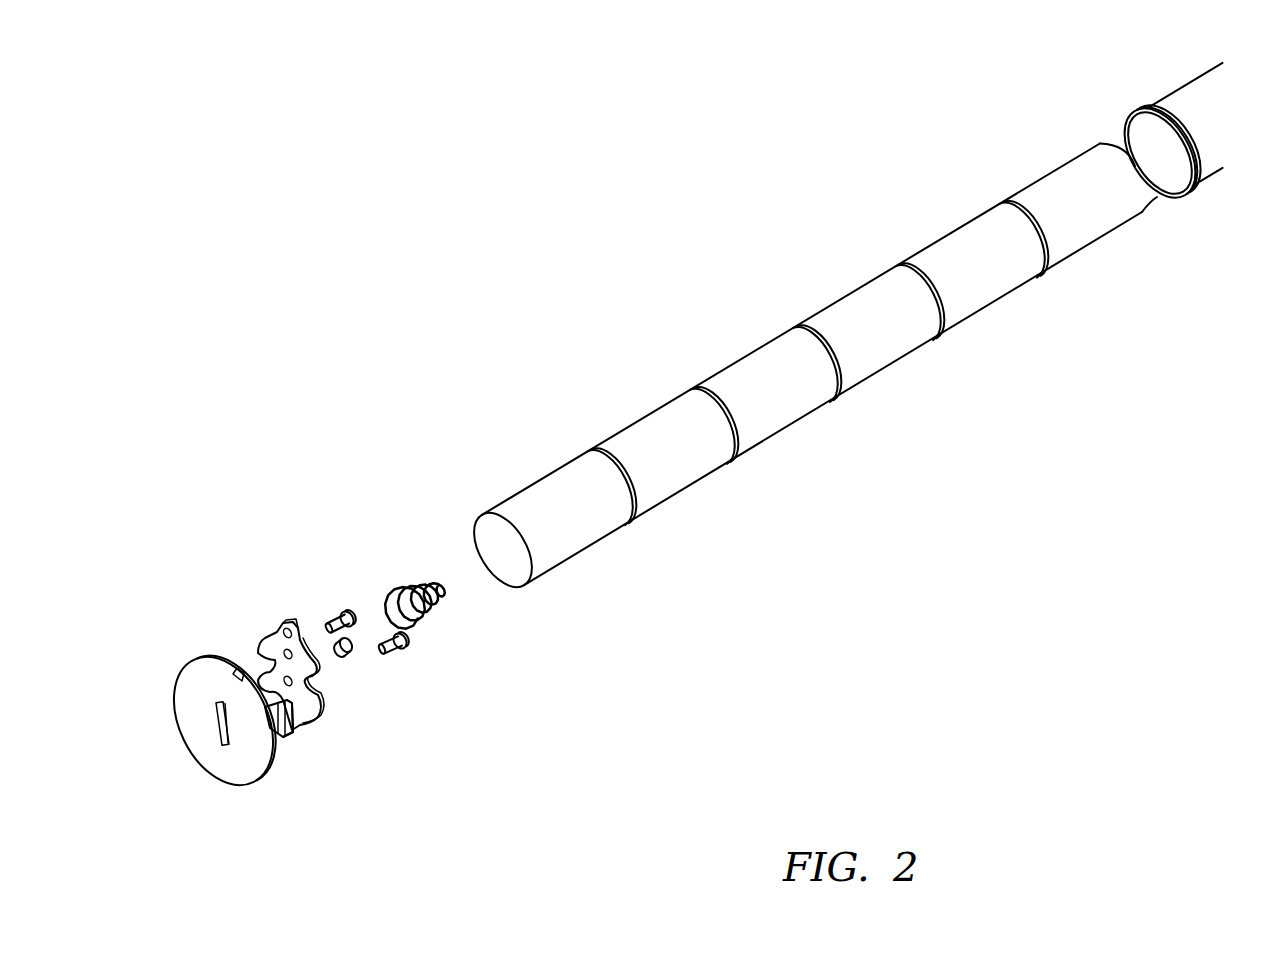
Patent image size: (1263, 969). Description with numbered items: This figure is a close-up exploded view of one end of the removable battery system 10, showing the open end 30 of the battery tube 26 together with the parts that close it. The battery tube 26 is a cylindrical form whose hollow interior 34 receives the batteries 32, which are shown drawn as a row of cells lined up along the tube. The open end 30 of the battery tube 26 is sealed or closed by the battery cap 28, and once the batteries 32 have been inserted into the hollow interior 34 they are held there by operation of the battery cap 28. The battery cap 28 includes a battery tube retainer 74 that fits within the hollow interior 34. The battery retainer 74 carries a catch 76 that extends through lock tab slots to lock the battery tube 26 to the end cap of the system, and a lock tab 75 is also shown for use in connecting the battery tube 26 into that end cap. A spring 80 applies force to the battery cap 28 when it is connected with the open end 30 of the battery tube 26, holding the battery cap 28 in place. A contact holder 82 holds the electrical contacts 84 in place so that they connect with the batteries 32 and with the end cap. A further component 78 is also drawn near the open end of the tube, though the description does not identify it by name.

The removable battery system 10 is at (609, 206).
The battery tube 26 is at (1193, 112).
The battery cap 28 is at (240, 782).
The open end 30 is at (1140, 128).
The batteries 32 is at (573, 537).
The hollow interior 34 is at (1177, 170).
The battery tube retainer 74 is at (282, 738).
The lock tab 75 is at (238, 668).
The catch 76 is at (302, 724).
The neck 78 is at (1172, 193).
The spring 80 is at (400, 586).
The contact holder 82 is at (270, 645).
The electrical contacts 84 is at (335, 612).